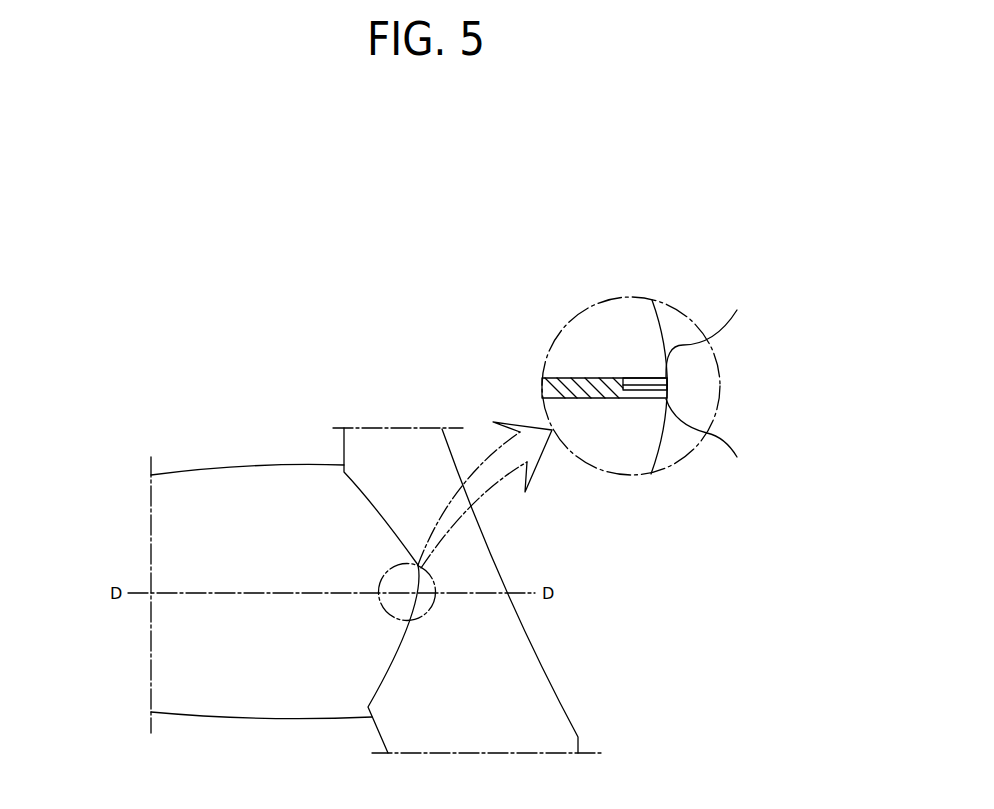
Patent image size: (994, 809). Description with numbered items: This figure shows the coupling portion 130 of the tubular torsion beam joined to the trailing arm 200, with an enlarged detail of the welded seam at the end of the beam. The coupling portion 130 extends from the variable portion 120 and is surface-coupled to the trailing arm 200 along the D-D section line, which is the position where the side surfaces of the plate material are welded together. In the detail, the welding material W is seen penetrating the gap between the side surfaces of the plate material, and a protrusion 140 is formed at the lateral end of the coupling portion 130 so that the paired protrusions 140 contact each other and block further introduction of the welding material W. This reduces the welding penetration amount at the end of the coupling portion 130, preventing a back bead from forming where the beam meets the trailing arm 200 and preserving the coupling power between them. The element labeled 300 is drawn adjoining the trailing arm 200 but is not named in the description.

The tool 300 is at (237, 462).
The trailing arm 200 is at (540, 657).
The coupling portion 130 is at (597, 318).
The variable portion 120 is at (678, 323).
The protrusion 140 is at (720, 388).
The welding material W is at (547, 389).